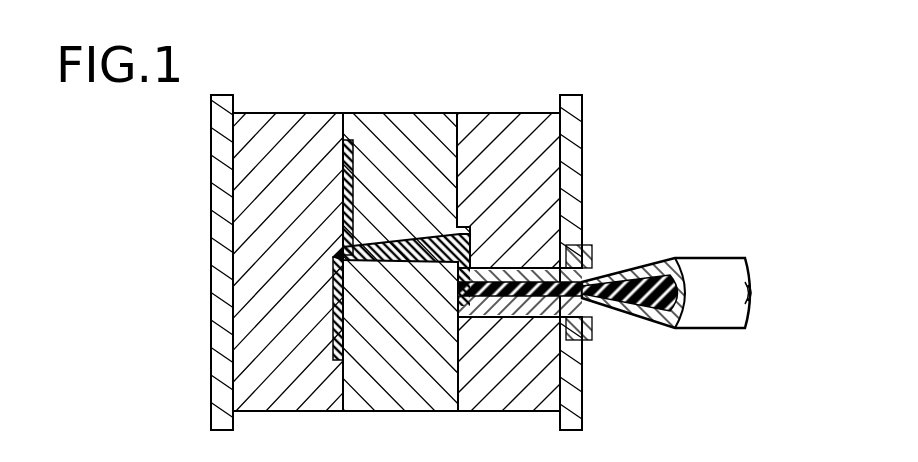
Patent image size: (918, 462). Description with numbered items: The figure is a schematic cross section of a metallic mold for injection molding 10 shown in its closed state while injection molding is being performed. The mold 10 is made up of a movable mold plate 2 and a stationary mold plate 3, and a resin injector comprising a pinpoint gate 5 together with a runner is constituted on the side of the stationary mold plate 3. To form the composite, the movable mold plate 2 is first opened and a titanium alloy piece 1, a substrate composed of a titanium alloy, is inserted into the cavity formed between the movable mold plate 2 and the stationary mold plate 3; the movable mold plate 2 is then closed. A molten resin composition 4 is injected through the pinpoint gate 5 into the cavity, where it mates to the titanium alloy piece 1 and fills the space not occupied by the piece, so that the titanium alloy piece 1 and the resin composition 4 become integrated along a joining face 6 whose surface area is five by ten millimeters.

The titanium alloy piece 1 is at (332, 327).
The movable mold plate 2 is at (297, 117).
The stationary mold plate 3 is at (410, 117).
The resin composition 4 is at (355, 177).
The pinpoint gate 5 is at (398, 238).
The joining face 6 is at (336, 256).
The metallic mold for injection molding 10 is at (488, 114).